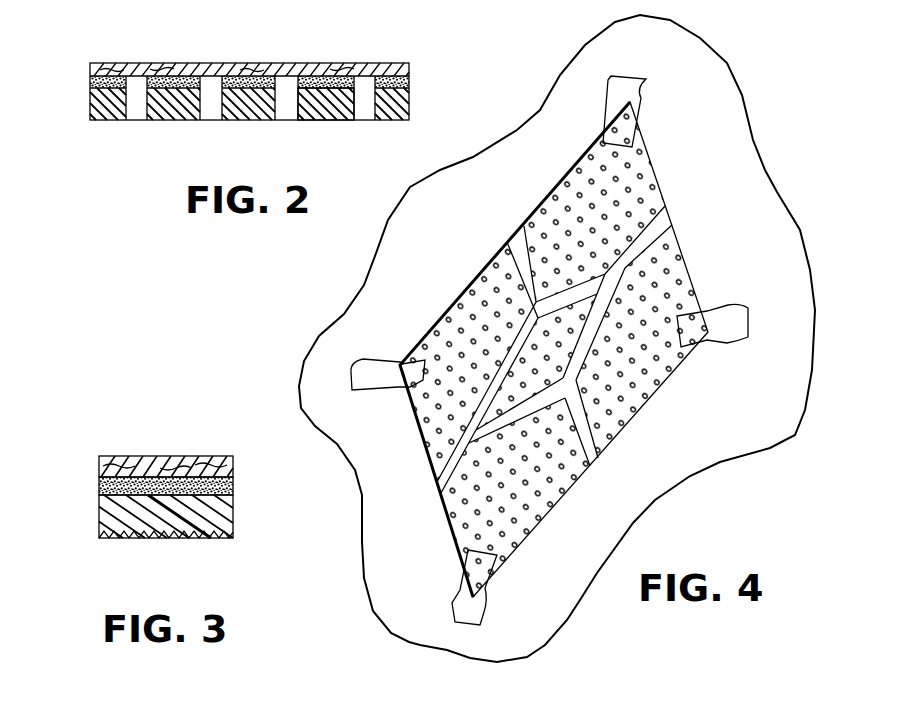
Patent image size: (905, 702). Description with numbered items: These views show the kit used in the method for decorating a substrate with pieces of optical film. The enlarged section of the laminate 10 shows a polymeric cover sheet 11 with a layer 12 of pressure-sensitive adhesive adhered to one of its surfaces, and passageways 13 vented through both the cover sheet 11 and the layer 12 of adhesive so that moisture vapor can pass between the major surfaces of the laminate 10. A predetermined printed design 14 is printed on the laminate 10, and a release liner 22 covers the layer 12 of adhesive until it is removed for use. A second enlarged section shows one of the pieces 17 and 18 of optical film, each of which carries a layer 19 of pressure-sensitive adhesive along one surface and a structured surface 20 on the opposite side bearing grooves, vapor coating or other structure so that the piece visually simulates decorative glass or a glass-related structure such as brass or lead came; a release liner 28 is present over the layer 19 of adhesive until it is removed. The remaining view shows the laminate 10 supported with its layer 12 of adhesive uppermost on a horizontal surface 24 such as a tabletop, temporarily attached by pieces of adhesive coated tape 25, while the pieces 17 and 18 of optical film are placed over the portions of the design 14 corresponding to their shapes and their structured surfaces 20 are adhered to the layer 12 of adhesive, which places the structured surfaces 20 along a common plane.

In FIG. 2, the laminate 10 is at (430, 70).
In FIG. 2, the polymeric cover sheet 11 is at (98, 107).
In FIG. 2, the layer of pressure-sensitive adhesive 12 is at (89, 83).
In FIG. 2, the passageways 13 is at (210, 97).
In FIG. 2, the printed design 14 is at (348, 113).
In FIG. 2, the release liner 22 is at (103, 63).
In FIG. 3, the release liners 28 is at (203, 458).
In FIG. 4, the release liners 28 is at (582, 300).
In FIG. 3, the layer of pressure-sensitive adhesive 19 is at (100, 482).
In FIG. 4, the layer of pressure-sensitive adhesive 19 is at (579, 160).
In FIG. 3, the piece of optical film 18 is at (100, 513).
In FIG. 4, the piece of optical film 18 is at (586, 283).
In FIG. 3, the structured surface 20 is at (168, 540).
In FIG. 4, the piece of optical film 17 is at (530, 244).
In FIG. 4, the horizontal surface 24 is at (756, 190).
In FIG. 4, the pieces of adhesive coated tape 25 is at (634, 92).